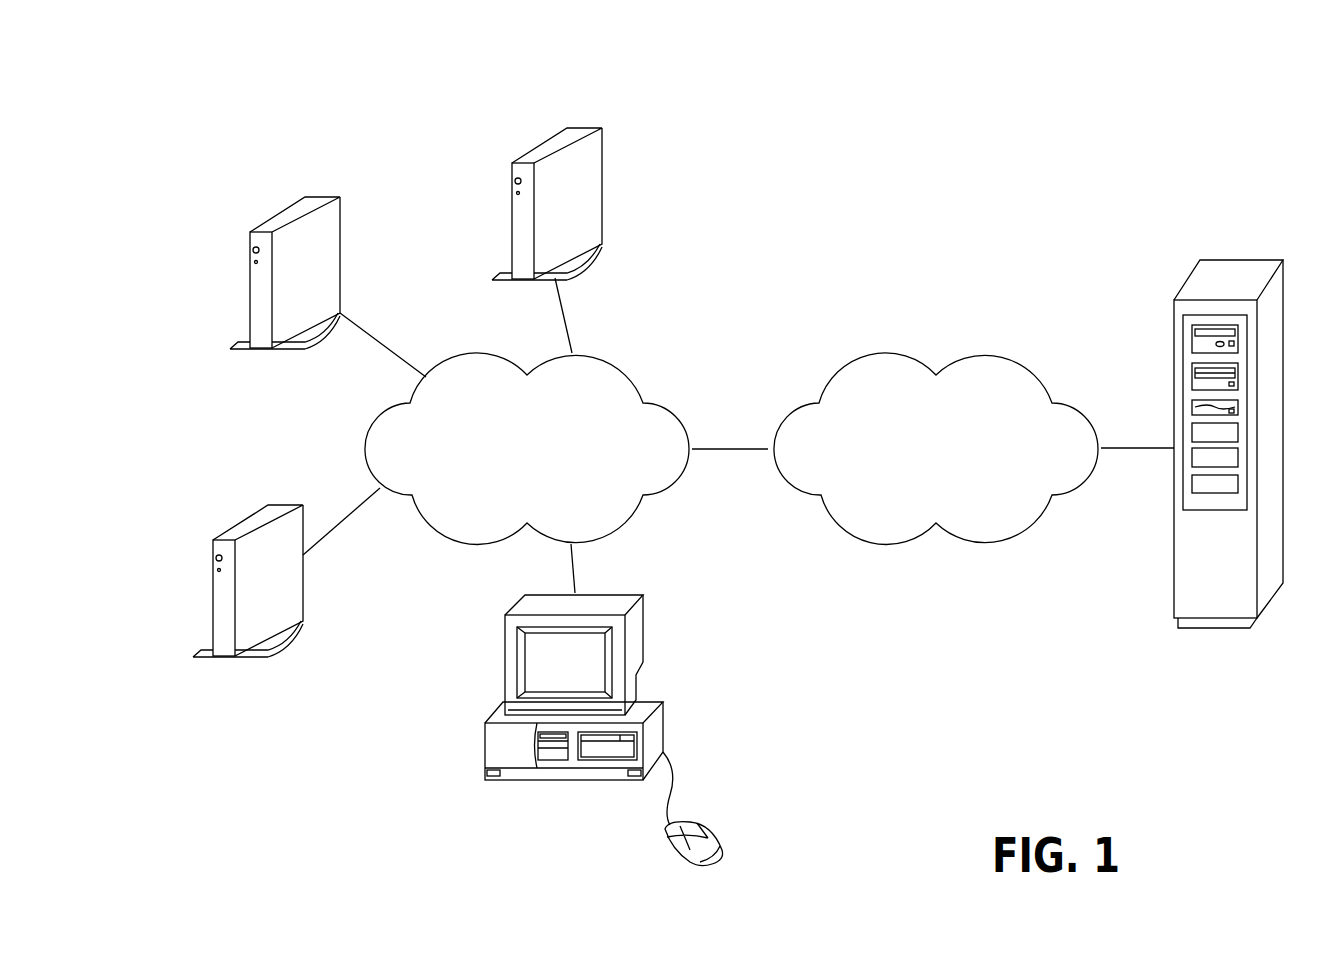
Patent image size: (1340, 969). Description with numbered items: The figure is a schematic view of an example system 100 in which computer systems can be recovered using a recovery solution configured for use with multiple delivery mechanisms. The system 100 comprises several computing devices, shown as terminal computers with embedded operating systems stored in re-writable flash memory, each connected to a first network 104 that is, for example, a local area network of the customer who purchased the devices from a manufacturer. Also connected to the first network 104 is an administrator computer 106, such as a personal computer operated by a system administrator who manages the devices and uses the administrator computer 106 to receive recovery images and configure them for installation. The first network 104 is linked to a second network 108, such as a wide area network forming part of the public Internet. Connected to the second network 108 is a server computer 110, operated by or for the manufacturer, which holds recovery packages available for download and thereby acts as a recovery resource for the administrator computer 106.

The system 100 is at (125, 95).
The first network 104 is at (545, 477).
The administrator computer 106 is at (632, 631).
The second network 108 is at (953, 477).
The server computer 110 is at (1275, 293).